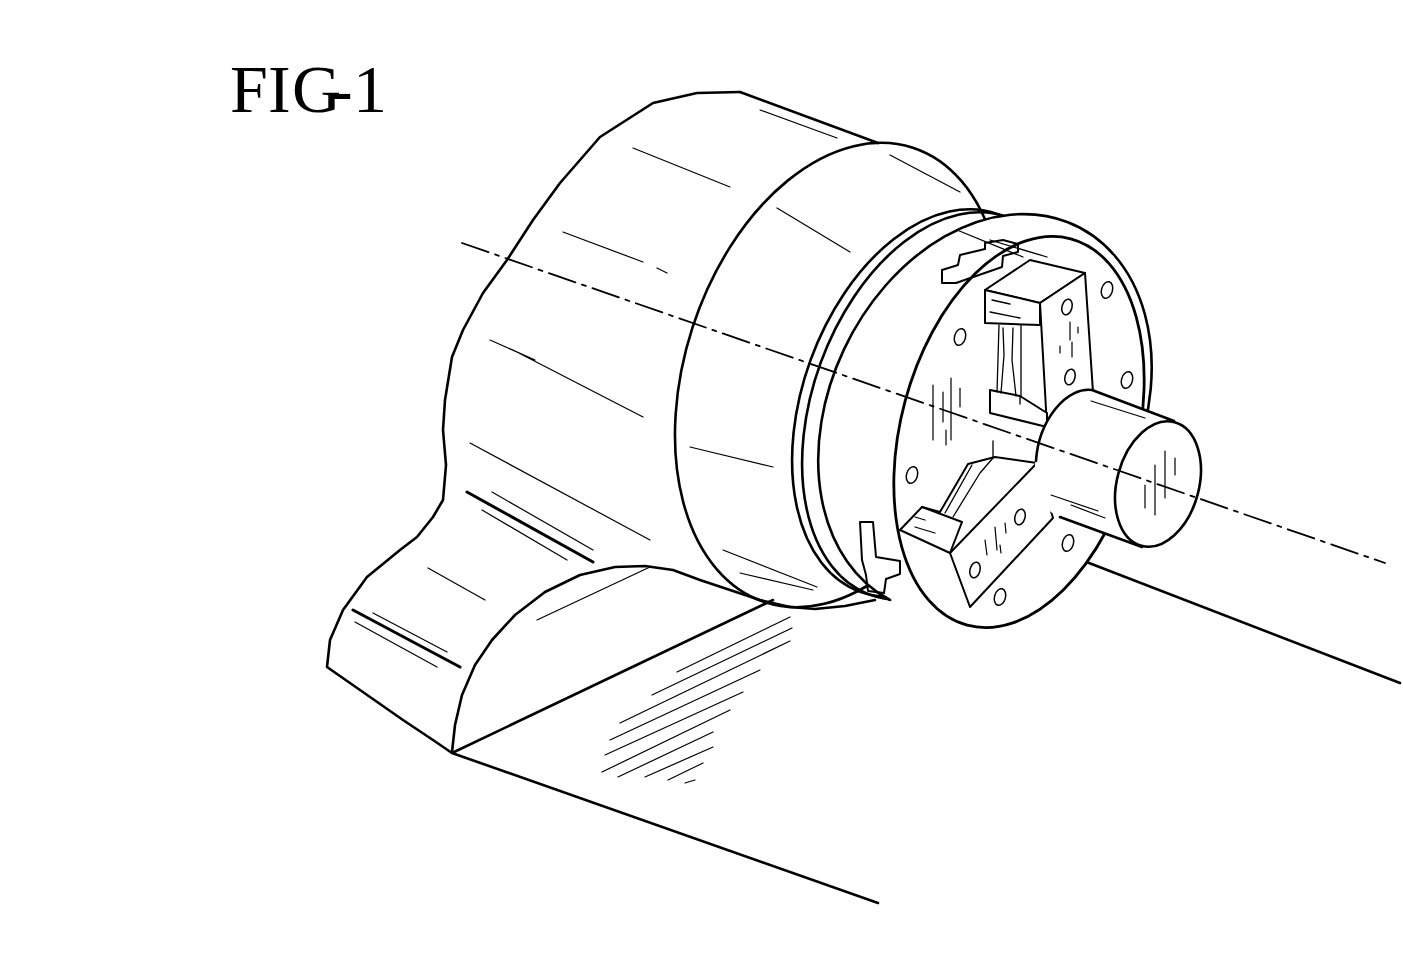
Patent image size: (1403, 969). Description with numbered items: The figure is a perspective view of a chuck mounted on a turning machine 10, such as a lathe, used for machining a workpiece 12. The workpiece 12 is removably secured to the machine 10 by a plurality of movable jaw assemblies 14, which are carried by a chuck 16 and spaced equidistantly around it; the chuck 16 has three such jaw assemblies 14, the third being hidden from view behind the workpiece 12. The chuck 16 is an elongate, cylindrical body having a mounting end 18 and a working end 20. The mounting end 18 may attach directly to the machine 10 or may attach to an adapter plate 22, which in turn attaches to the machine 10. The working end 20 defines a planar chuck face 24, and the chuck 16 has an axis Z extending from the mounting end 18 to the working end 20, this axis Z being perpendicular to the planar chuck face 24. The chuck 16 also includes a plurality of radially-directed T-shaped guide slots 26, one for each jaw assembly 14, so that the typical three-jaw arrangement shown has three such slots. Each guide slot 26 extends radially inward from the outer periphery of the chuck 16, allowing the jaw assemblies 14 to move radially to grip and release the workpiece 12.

The turning machine 10 is at (1141, 107).
The workpiece 12 is at (1184, 448).
The jaw assembly 14 is at (1113, 321).
The chuck 16 is at (1002, 639).
The mounting end 18 is at (1001, 246).
The working end 20 is at (918, 605).
The adapter plate 22 is at (948, 223).
The planar chuck face 24 is at (1123, 367).
The T-shaped guide slot 26 is at (1000, 263).
The axis Z is at (1307, 534).